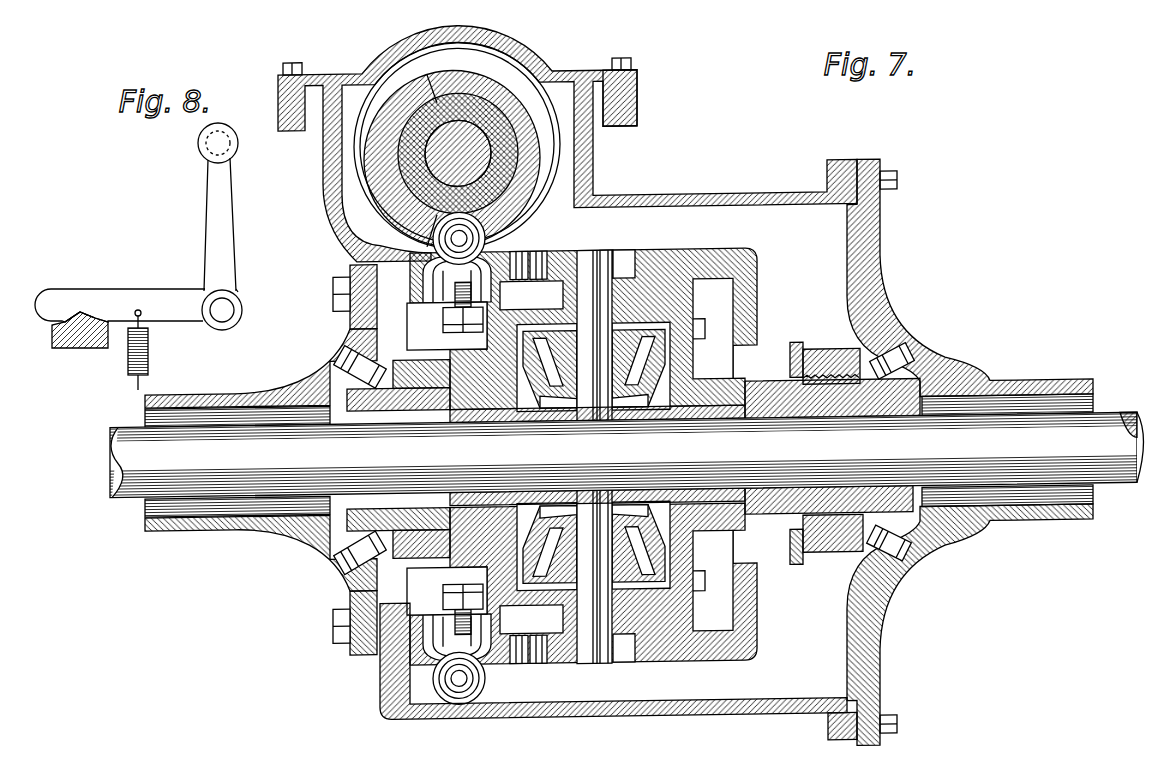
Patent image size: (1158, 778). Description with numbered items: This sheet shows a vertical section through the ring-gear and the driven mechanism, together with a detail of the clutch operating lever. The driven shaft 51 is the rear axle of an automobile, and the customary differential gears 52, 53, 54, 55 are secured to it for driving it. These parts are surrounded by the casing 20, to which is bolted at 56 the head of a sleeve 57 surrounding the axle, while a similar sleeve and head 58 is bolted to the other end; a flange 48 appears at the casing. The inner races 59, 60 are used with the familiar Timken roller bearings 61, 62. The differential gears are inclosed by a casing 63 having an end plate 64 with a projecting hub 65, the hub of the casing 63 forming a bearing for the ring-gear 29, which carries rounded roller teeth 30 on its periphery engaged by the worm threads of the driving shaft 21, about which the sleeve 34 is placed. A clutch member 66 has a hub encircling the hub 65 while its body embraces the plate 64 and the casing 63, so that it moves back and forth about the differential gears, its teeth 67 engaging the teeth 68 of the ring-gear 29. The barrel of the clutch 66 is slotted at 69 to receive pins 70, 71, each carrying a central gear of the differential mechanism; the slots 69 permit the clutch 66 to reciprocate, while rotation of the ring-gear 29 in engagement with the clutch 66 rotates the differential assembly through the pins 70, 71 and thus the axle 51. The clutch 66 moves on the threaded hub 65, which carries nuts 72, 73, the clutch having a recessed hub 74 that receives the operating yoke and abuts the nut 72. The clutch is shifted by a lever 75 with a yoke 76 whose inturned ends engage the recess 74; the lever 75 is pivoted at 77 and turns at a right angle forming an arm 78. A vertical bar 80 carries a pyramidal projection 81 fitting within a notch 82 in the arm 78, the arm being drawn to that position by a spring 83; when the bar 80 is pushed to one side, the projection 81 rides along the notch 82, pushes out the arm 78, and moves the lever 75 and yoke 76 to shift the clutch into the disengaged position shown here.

In FIG. 7, the casing 20 is at (537, 59).
In FIG. 7, the driving shaft 21 is at (462, 150).
In FIG. 7, the ring-gear 29 is at (372, 254).
In FIG. 7, the roller teeth 30 is at (478, 230).
In FIG. 7, the sleeve 34 is at (567, 180).
In FIG. 7, the flange 48 is at (612, 100).
In FIG. 7, the driven shaft 51 is at (1104, 494).
In FIG. 7, the differential gear 52 is at (540, 405).
In FIG. 7, the differential gear 53 is at (690, 339).
In FIG. 7, the differential gear 54 is at (650, 405).
In FIG. 7, the differential gear 55 is at (713, 580).
In FIG. 7, the bolt 56 is at (897, 187).
In FIG. 7, the sleeve 57 is at (882, 304).
In FIG. 7, the sleeve and head 58 is at (352, 316).
In FIG. 7, the inner race 59 is at (947, 532).
In FIG. 7, the inner race 60 is at (350, 531).
In FIG. 7, the roller bearing 61 is at (885, 356).
In FIG. 7, the roller bearing 62 is at (335, 358).
In FIG. 7, the casing 63 is at (531, 457).
In FIG. 7, the end plate 64 is at (752, 334).
In FIG. 7, the hub 65 is at (805, 353).
In FIG. 7, the clutch member 66 is at (757, 302).
In FIG. 7, the teeth 67 is at (585, 255).
In FIG. 7, the teeth 68 is at (545, 251).
In FIG. 7, the slots 69 is at (640, 262).
In FIG. 7, the pin 70 is at (618, 250).
In FIG. 7, the pin 71 is at (607, 660).
In FIG. 7, the nut 72 is at (806, 561).
In FIG. 7, the nut 73 is at (449, 458).
In FIG. 7, the recessed hub 74 is at (760, 360).
In FIG. 8, the lever 75 is at (243, 262).
In FIG. 8, the yoke 76 is at (226, 190).
In FIG. 8, the pivot 77 is at (222, 322).
In FIG. 8, the arm 78 is at (180, 290).
In FIG. 8, the vertical bar 80 is at (90, 343).
In FIG. 8, the pyramidal projection 81 is at (75, 306).
In FIG. 8, the notch 82 is at (88, 320).
In FIG. 8, the spring 83 is at (148, 352).